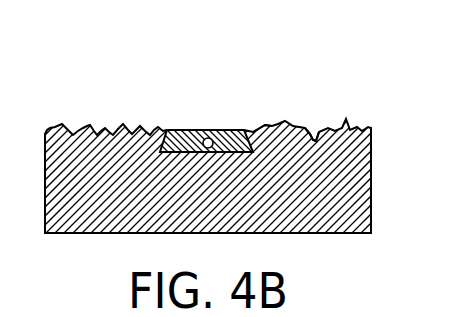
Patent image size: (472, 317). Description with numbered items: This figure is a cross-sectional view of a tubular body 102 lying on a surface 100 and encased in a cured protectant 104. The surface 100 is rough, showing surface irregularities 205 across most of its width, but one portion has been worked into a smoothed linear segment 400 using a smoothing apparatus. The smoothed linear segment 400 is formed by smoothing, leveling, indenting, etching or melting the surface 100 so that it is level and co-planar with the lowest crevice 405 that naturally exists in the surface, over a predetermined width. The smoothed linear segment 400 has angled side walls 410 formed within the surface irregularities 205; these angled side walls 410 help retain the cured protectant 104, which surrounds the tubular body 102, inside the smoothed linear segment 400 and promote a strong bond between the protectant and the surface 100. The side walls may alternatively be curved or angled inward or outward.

The surface 100 is at (360, 130).
The surface irregularities 205 is at (87, 125).
The smoothed linear segment 400 is at (175, 151).
The tubular body 102 is at (208, 138).
The cured protectant 104 is at (228, 130).
The angled side walls 410 is at (262, 128).
The lowest crevice 405 is at (315, 139).